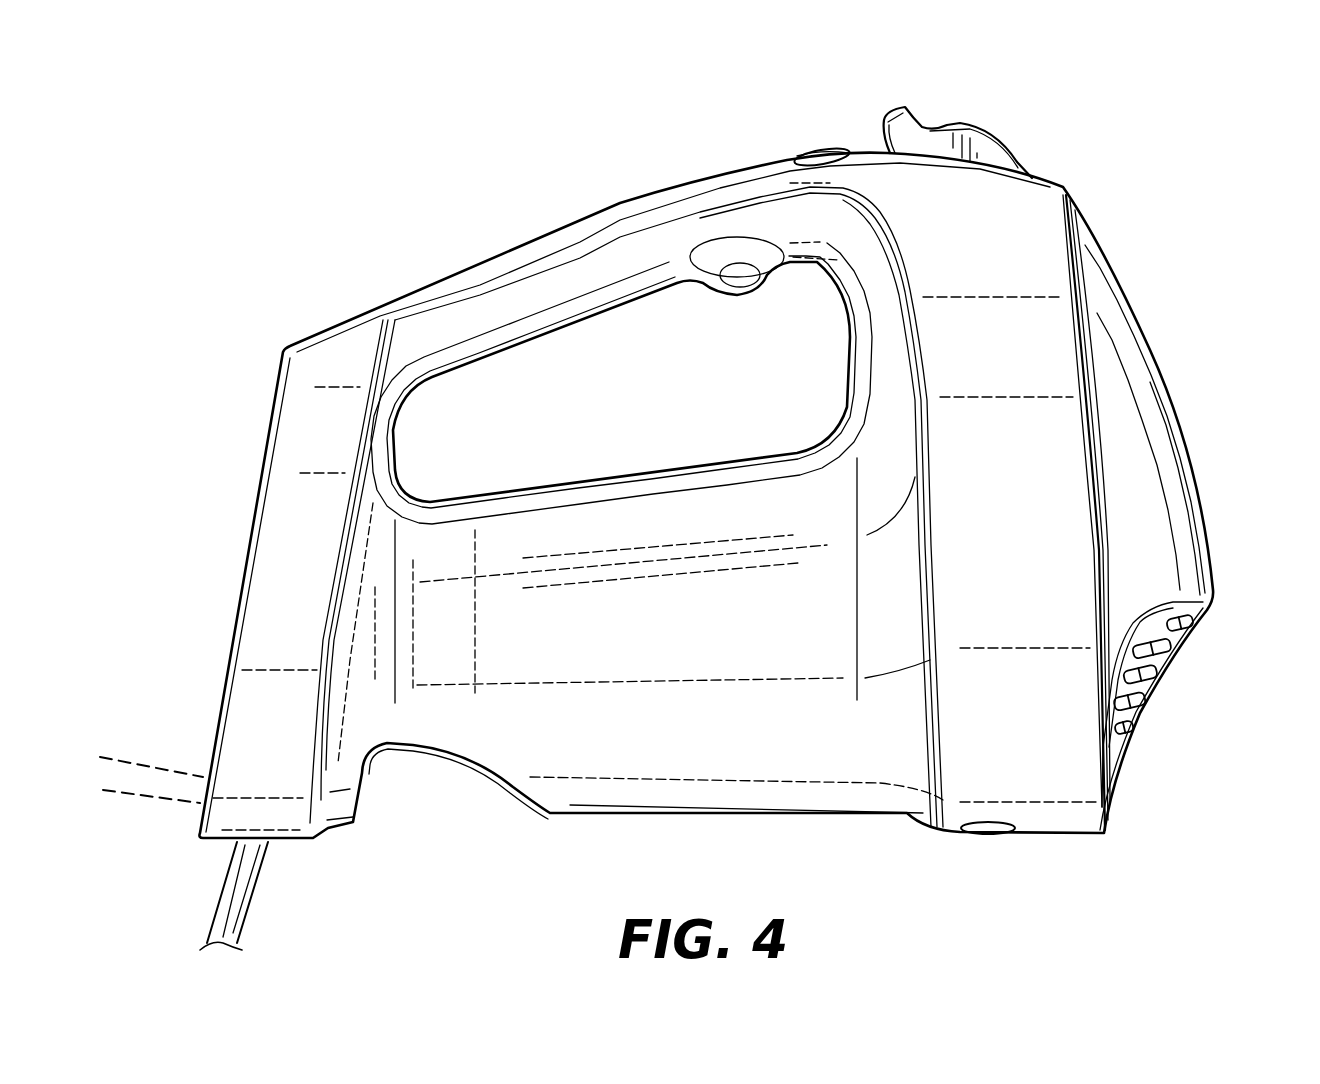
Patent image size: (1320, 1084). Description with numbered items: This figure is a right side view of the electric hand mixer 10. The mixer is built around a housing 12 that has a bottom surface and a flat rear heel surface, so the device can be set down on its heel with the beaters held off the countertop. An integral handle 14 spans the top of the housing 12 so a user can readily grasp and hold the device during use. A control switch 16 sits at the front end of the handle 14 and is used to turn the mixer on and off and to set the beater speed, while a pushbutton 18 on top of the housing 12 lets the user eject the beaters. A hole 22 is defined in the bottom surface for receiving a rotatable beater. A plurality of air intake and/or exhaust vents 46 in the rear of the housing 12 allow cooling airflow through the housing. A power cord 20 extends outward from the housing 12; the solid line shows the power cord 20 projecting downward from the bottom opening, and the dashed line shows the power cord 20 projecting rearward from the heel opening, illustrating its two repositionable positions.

The electric hand mixer 10 is at (1186, 92).
The housing 12 is at (1070, 473).
The handle 14 is at (582, 233).
The control switch 16 is at (977, 137).
The pushbutton 18 is at (820, 152).
The power cord 20 is at (140, 768).
The hole 22 is at (987, 832).
The air intake and/or exhaust vents 46 is at (1172, 647).